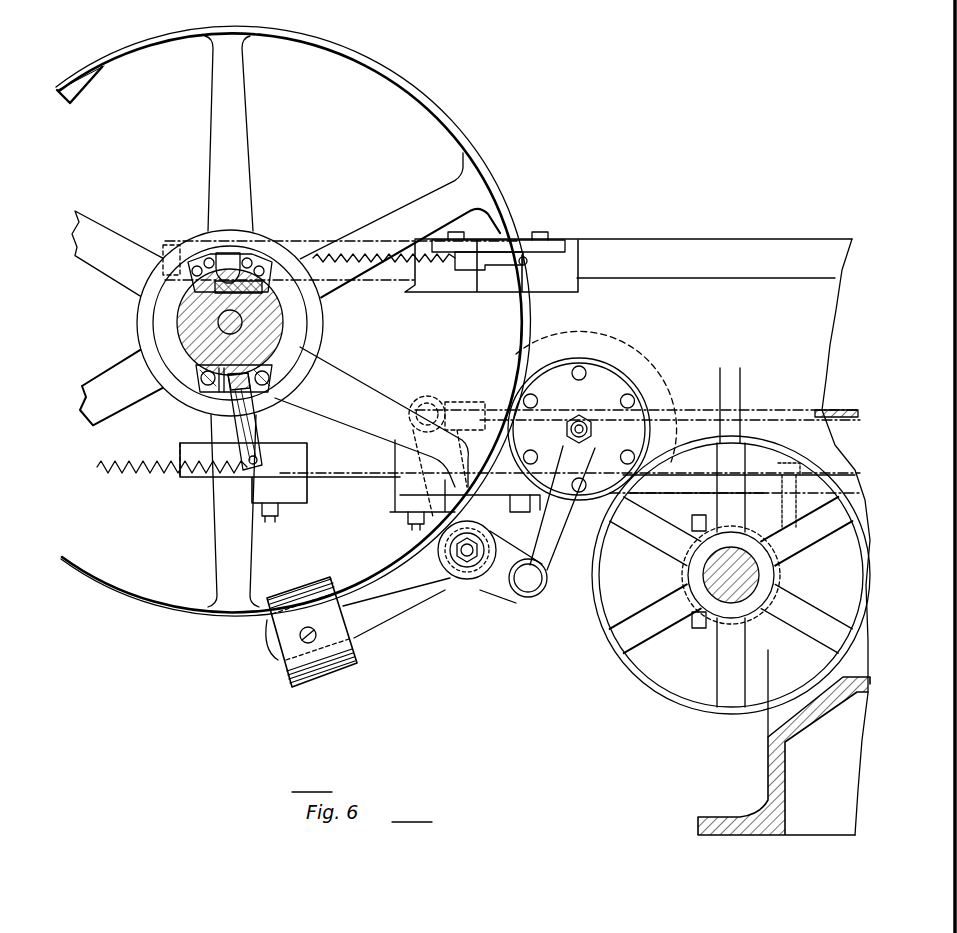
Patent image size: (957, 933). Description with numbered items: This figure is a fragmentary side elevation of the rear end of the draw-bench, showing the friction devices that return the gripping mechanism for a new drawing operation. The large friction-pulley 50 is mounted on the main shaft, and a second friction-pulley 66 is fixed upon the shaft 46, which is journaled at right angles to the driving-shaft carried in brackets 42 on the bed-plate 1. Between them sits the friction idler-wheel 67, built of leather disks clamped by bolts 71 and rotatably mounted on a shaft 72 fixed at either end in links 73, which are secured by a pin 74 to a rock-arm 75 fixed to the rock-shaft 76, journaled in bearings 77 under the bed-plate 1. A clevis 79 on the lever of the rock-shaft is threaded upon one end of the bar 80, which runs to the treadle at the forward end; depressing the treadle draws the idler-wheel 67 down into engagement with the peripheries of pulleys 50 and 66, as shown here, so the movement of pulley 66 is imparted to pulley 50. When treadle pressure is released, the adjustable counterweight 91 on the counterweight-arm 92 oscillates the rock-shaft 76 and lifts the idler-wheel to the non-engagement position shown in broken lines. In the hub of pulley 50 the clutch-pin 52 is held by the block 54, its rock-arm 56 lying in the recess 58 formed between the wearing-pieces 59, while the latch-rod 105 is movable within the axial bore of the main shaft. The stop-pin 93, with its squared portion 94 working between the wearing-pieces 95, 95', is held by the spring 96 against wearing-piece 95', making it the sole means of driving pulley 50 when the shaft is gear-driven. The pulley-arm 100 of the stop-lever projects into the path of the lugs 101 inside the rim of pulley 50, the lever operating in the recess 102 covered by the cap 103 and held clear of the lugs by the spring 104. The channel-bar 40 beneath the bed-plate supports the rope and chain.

The bed-plate 1 is at (806, 340).
The channel-bar 40 is at (348, 478).
The brackets 42 is at (787, 777).
The shaft 46 is at (703, 574).
The friction-pulley 50 is at (325, 48).
The clutch-pin 52 is at (246, 284).
The block 54 is at (280, 287).
The rock-arm 56 is at (228, 250).
The recess 58 is at (224, 283).
The wearing-pieces 59 is at (200, 264).
The friction-pulley 66 is at (678, 703).
The friction idler-wheel 67 is at (600, 367).
The bolts 71 is at (660, 404).
The shaft 72 is at (592, 431).
The links 73 is at (552, 540).
The pin 74 is at (529, 584).
The rock-arm 75 is at (506, 586).
The rock-shaft 76 is at (464, 556).
The bearings 77 is at (402, 510).
The clevis 79 is at (455, 400).
The bar 80 is at (836, 410).
The counterweight 91 is at (290, 668).
The counterweight-arm 92 is at (396, 617).
The stop-pin 93 is at (258, 452).
The squared portion 94 is at (250, 387).
The wearing-piece 95 is at (271, 378).
The wearing-piece 95' is at (185, 399).
The spring 96 is at (100, 472).
The pulley-arm 100 is at (484, 250).
The lugs 101 is at (398, 106).
The recess 102 is at (520, 260).
The cap 103 is at (466, 248).
The spring 104 is at (423, 259).
The latch-rod 105 is at (228, 323).